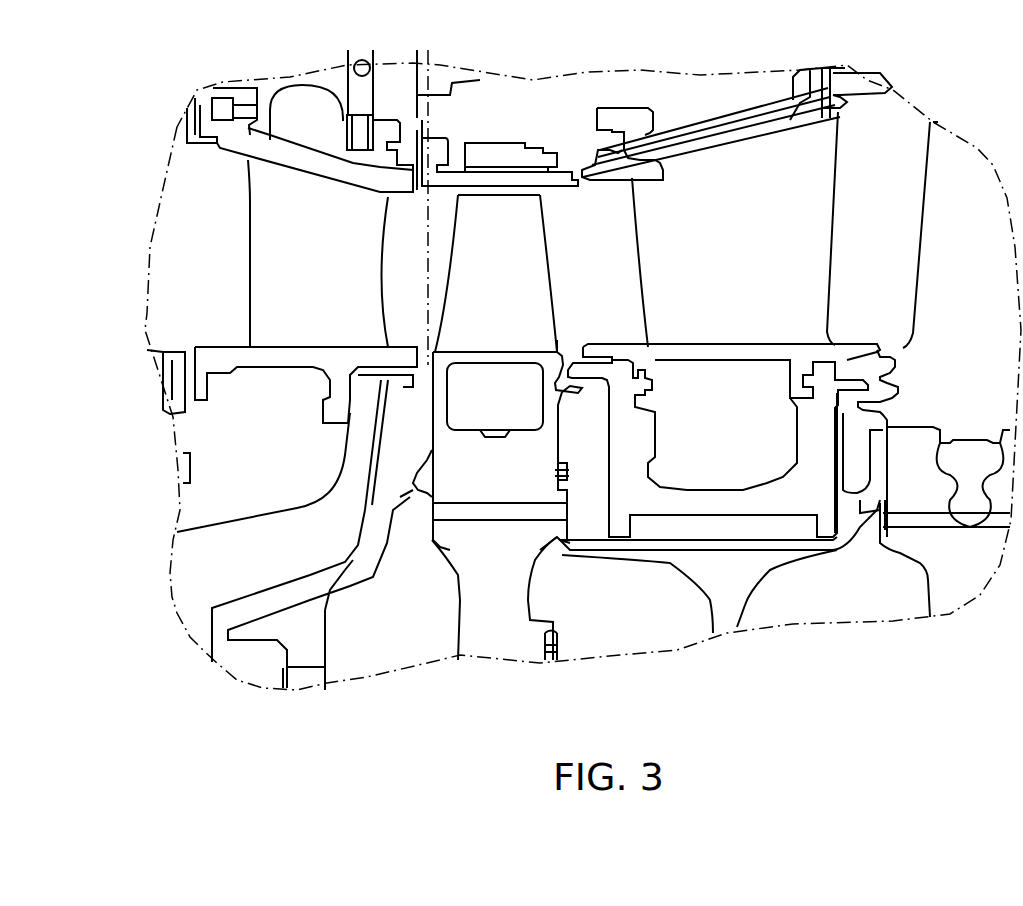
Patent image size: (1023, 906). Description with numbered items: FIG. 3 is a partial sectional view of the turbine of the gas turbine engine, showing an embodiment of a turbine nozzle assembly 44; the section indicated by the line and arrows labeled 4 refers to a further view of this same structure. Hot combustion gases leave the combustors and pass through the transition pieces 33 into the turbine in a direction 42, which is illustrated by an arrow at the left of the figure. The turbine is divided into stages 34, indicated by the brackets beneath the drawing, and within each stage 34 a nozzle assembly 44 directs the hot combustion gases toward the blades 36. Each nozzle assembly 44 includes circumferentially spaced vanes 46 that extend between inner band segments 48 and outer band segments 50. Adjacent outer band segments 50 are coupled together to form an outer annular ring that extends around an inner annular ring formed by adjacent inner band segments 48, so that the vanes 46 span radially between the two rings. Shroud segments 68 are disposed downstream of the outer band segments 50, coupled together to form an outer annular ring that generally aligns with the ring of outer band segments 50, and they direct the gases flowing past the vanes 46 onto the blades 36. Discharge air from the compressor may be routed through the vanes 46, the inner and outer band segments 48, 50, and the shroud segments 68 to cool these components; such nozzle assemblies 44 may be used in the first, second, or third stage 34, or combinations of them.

The section line 4- 4 is at (428, 100).
The transition piece 33 is at (173, 370).
The stage 34 is at (557, 708).
The blade 36 is at (517, 268).
The direction 42 is at (222, 258).
The nozzle assembly 44 is at (290, 398).
The vane 46 is at (326, 253).
The inner band segment 48 is at (267, 360).
The outer band segment 50 is at (228, 145).
The shroud segment 68 is at (503, 173).